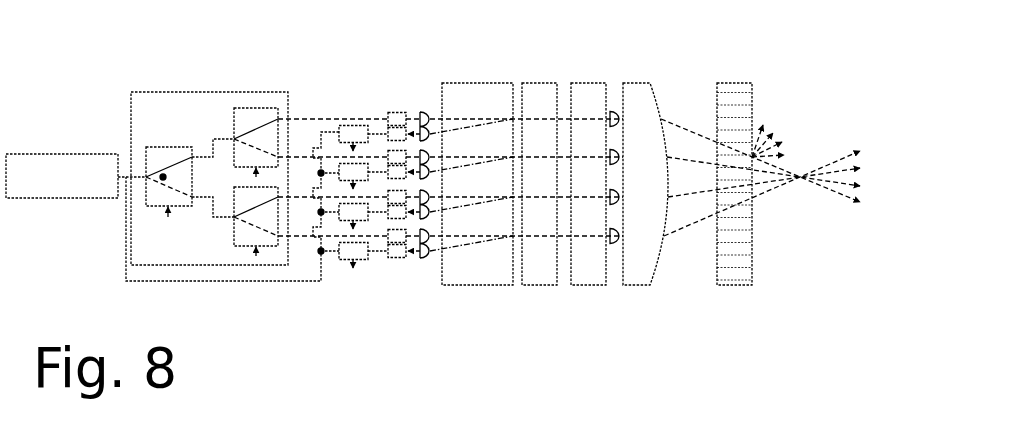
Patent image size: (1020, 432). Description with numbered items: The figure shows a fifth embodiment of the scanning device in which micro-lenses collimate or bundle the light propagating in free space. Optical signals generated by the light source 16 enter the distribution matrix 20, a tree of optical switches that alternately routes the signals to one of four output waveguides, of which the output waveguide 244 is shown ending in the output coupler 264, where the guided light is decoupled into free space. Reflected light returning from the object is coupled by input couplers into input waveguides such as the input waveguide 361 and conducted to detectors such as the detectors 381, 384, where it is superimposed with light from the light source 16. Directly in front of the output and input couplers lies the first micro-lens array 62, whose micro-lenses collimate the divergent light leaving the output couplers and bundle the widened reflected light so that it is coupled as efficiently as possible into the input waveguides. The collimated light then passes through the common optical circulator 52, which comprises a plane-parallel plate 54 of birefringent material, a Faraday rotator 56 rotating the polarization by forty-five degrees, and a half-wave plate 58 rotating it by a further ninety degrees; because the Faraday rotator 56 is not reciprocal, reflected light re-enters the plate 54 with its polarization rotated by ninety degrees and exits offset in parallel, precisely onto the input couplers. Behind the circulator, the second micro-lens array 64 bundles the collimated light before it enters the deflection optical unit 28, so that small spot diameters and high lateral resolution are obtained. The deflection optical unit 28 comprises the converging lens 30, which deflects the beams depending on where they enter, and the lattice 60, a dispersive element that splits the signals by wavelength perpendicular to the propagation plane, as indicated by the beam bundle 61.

The light source 16 is at (83, 154).
The distribution matrix 20 is at (173, 92).
The output waveguide 244 is at (330, 119).
The detector 384 is at (360, 125).
The detector 381 is at (343, 260).
The input waveguide 361 is at (380, 253).
The output coupler 264 is at (398, 112).
The first micro-lens array 62 is at (427, 104).
The common optical circulator 52 is at (542, 206).
The plane-parallel plate 54 is at (487, 84).
The Faraday rotator 56 is at (537, 84).
The half-wave plate 58 is at (587, 84).
The second micro-lens array 64 is at (614, 101).
The deflection optical unit 28 is at (741, 206).
The converging lens 30 is at (638, 84).
The lattice 60 is at (733, 84).
The beam bundle 61 is at (790, 113).